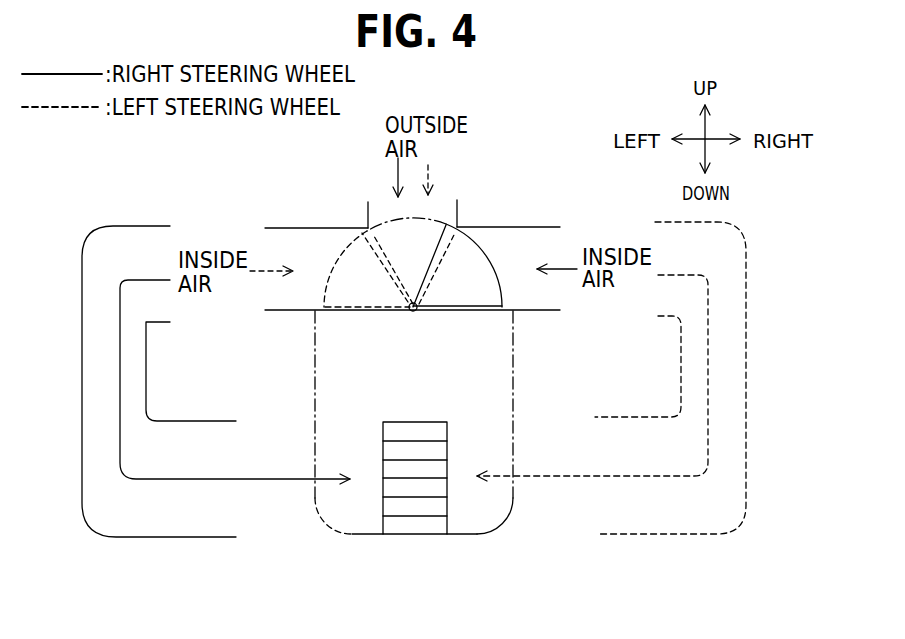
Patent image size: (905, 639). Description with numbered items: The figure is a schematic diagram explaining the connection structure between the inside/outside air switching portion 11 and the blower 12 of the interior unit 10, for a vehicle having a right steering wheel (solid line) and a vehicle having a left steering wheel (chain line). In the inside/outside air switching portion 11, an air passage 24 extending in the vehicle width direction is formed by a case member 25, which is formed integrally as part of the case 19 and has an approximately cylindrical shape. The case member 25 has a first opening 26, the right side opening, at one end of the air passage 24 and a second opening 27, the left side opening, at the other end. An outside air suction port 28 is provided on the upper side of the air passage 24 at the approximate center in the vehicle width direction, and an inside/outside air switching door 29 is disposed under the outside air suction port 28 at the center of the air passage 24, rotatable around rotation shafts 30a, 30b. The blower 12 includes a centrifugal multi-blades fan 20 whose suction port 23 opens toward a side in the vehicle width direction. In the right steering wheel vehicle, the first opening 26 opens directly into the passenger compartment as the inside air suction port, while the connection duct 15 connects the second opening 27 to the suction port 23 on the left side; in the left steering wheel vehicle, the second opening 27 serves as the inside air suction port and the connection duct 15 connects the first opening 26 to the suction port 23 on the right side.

The interior unit 10 is at (508, 531).
The inside/outside air switching portion 11 is at (470, 209).
The blower 12 is at (456, 524).
The connection duct 15 is at (148, 537).
The case 19 is at (513, 502).
The centrifugal multi-blades fan 20 is at (427, 527).
The suction port 23 is at (363, 478).
The air passage 24 is at (503, 250).
The case member 25 is at (537, 226).
The first opening 26 is at (577, 295).
The second opening 27 is at (257, 295).
The outside air suction port 28 is at (382, 210).
The inside/outside air switching door 29 is at (493, 277).
The rotation shaft 30a is at (415, 312).
The rotation shaft 30b is at (387, 268).